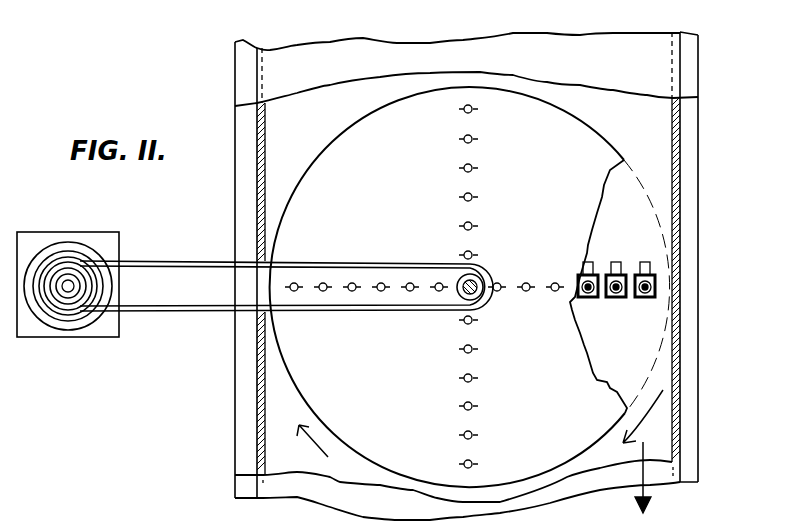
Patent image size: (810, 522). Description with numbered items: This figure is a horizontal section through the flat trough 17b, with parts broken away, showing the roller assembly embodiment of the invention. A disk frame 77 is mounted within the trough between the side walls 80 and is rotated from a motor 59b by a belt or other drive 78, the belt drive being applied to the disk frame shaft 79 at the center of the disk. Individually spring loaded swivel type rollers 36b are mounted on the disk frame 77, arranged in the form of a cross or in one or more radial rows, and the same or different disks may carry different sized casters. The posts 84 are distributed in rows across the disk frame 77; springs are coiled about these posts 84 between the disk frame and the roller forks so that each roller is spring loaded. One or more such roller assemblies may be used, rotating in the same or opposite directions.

The flat trough 17b is at (658, 117).
The rollers 36b is at (614, 260).
The motor 59b is at (86, 338).
The disk frame 77 is at (408, 170).
The belt drive 78 is at (213, 312).
The disk frame shaft 79 is at (482, 272).
The side walls 80 is at (682, 412).
The posts 84 is at (472, 142).